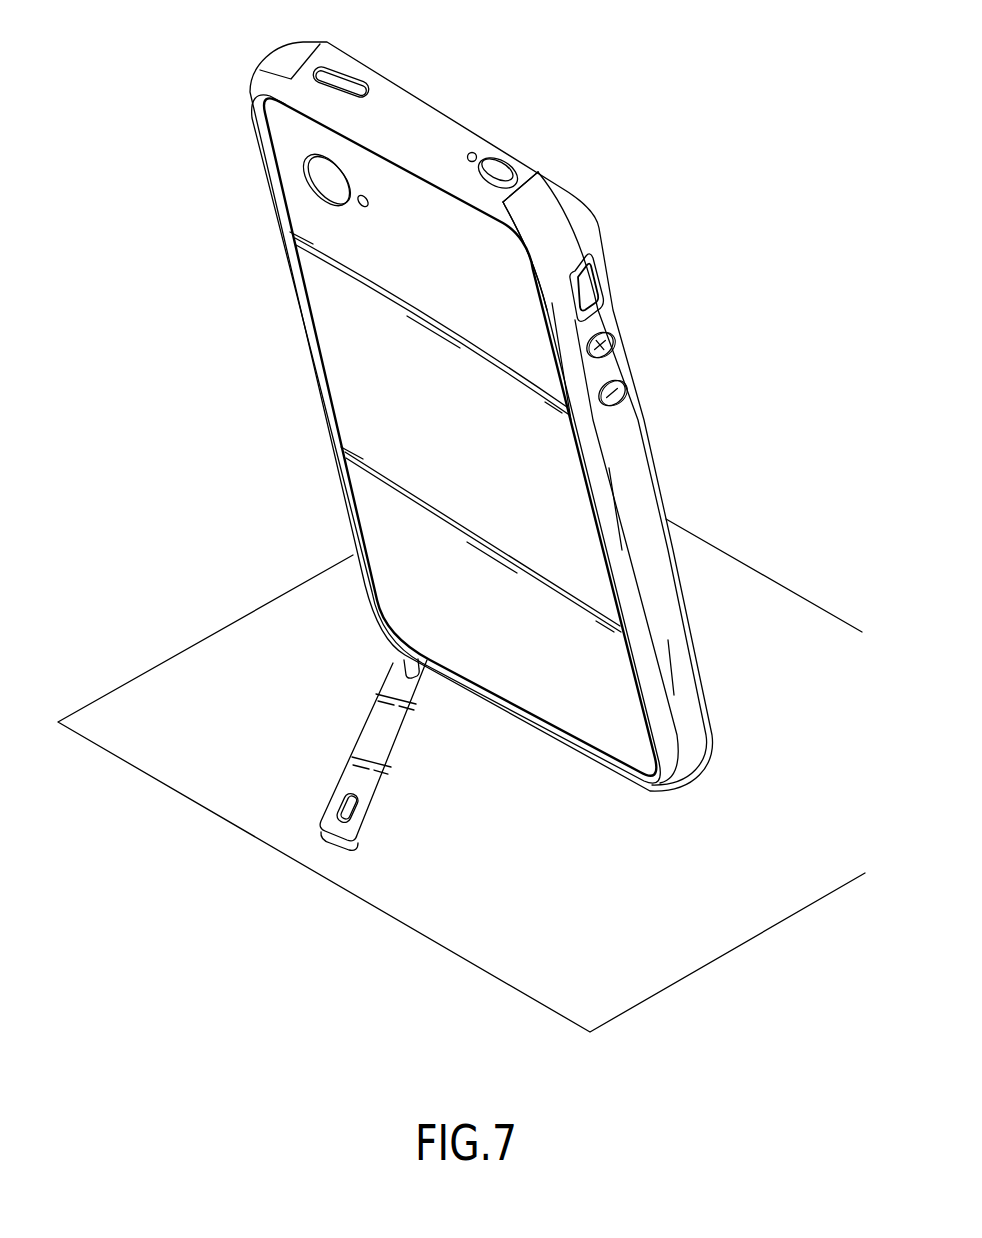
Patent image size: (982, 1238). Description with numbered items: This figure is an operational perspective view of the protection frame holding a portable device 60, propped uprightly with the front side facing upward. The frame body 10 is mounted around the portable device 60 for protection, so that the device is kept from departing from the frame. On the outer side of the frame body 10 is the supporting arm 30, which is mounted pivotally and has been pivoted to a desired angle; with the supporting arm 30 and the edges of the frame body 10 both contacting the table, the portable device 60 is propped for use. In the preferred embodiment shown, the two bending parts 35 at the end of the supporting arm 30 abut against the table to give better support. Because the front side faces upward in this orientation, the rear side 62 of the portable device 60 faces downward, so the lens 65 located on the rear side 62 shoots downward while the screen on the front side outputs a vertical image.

The frame body 10 is at (633, 484).
The portable device 60 is at (423, 213).
The rear side 62 is at (503, 303).
The lens 65 is at (323, 186).
The supporting arm 30 is at (387, 753).
The bending parts 35 is at (333, 838).